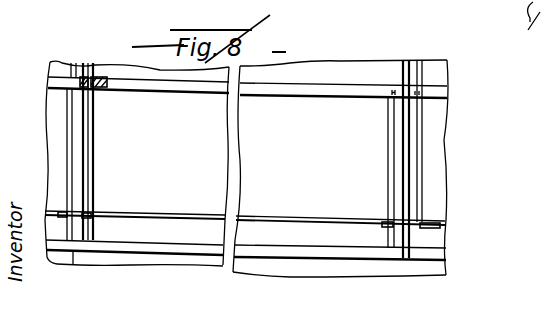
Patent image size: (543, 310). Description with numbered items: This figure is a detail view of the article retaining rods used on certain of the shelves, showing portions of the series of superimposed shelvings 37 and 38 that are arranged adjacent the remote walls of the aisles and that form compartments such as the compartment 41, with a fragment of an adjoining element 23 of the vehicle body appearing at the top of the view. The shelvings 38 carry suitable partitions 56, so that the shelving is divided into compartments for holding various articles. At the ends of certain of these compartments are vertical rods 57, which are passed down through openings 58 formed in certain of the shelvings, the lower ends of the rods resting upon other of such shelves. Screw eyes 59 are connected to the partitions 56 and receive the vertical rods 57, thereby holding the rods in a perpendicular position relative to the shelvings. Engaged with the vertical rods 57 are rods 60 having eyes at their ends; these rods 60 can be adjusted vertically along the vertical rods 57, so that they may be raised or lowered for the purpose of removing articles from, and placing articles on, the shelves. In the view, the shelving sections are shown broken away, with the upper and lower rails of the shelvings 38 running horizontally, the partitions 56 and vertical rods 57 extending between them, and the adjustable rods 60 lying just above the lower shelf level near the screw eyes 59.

The frame member (partial, figure above) 23 is at (199, 5).
The shelvings 37 is at (253, 9).
The shelvings 38 is at (197, 252).
The compartment 41 is at (297, 195).
The partition 56 is at (78, 128).
The vertical rod 57 is at (66, 179).
The opening 58 is at (92, 76).
The screw eye 59 is at (93, 218).
The rod 60 is at (190, 216).